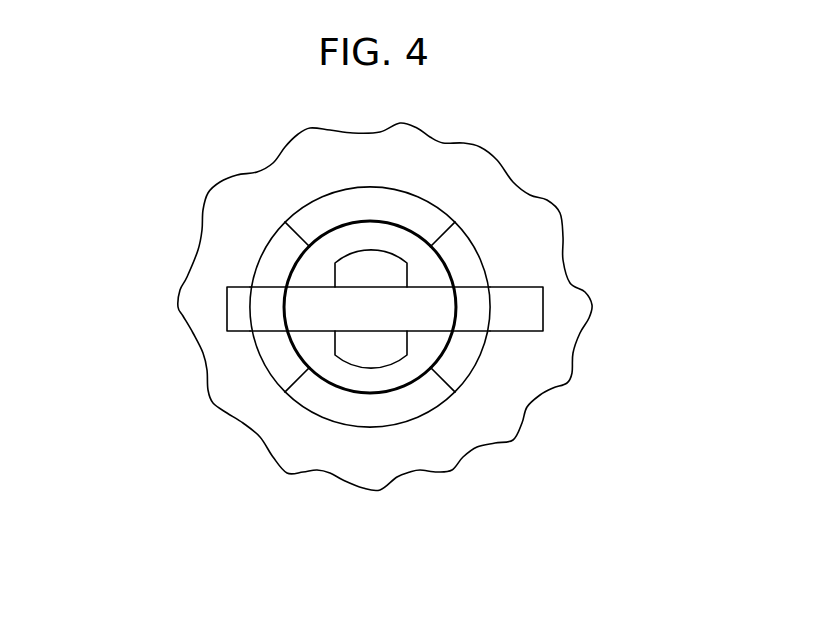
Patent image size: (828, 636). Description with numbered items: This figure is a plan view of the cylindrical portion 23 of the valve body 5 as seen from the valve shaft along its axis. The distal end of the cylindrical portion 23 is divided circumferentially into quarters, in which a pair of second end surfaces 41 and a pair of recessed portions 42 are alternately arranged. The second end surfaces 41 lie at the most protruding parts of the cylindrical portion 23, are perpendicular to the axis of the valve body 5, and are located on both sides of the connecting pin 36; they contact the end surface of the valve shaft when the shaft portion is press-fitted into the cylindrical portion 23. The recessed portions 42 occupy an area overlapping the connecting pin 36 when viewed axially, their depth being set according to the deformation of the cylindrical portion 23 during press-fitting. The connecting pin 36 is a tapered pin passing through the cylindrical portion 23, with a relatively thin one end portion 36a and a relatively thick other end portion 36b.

The valve body 5 is at (186, 350).
The cylindrical portion 23 is at (356, 327).
The connecting pin 36 is at (407, 284).
The one end portion 36a is at (235, 315).
The other end portion 36b is at (528, 293).
The second end surfaces 41 is at (352, 207).
The recessed portions 42 is at (273, 354).